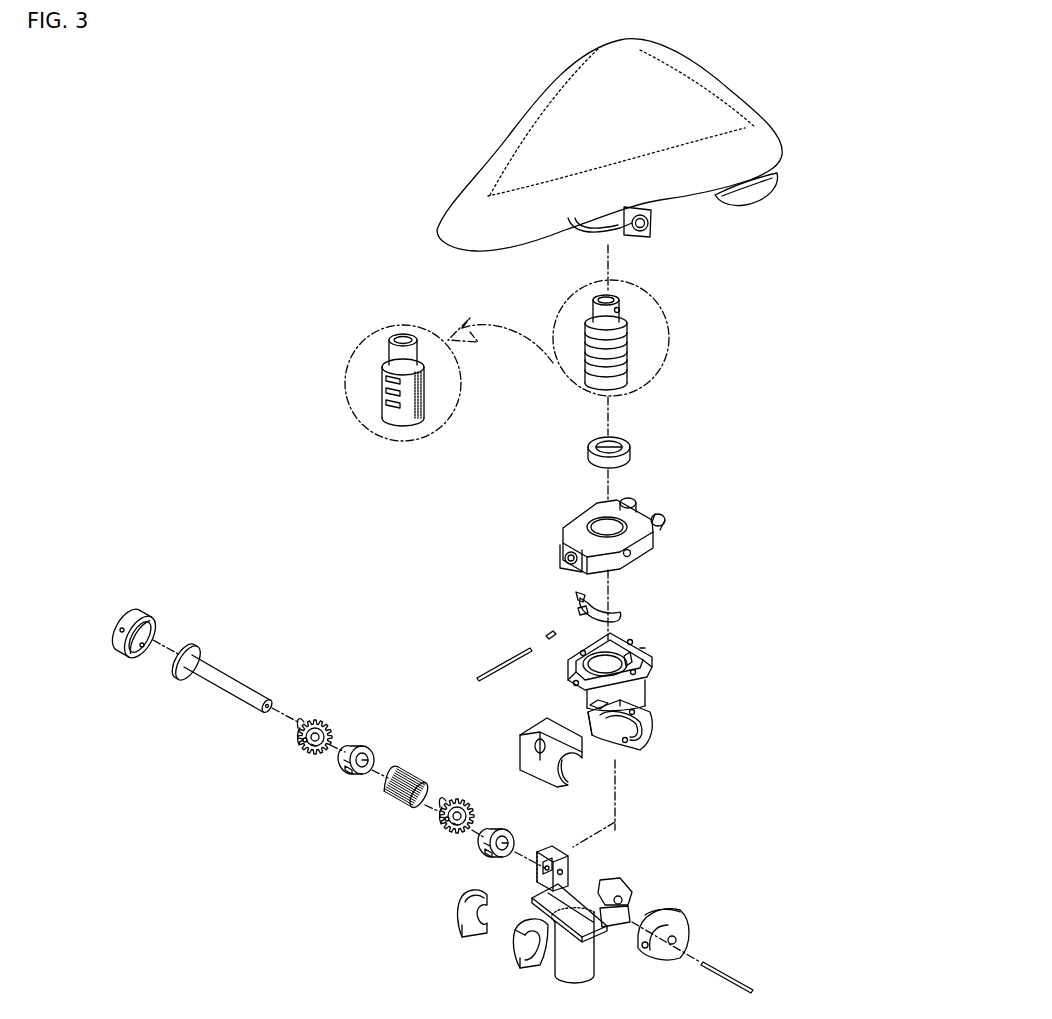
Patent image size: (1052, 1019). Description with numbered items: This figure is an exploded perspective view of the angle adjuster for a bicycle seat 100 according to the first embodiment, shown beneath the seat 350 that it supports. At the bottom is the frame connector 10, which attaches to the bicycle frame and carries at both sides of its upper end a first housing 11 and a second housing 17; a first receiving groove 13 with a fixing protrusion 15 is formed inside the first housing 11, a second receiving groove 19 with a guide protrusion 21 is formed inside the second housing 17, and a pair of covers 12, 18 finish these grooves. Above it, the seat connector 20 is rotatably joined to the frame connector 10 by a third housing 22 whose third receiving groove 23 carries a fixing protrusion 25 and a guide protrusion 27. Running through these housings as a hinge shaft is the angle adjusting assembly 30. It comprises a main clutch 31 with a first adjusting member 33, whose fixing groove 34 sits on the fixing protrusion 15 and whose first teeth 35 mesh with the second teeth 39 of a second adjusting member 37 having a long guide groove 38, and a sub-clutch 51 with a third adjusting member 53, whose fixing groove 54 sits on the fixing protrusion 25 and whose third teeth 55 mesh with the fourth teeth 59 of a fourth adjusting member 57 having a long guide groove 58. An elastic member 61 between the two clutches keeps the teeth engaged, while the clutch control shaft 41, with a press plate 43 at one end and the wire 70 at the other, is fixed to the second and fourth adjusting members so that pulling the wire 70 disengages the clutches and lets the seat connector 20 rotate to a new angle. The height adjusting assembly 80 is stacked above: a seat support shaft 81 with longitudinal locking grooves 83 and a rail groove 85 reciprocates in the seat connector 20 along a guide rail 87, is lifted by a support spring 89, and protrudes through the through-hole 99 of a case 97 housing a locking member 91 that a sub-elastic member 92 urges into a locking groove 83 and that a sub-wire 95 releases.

The angle adjuster for a bicycle seat 100 is at (287, 278).
The seat 350 is at (531, 167).
The height adjusting assembly 80 is at (710, 418).
The seat support shaft 81 is at (450, 355).
The locking grooves 83 is at (597, 372).
The rail groove 85 is at (430, 402).
The support spring 89 is at (630, 445).
The through-hole 99 is at (600, 520).
The case 97 is at (642, 648).
The locking member 91 is at (578, 602).
The sub-elastic member 92 is at (548, 634).
The sub-wire 95 is at (497, 660).
The guide rail 87 is at (648, 660).
The seat connector 20 is at (590, 733).
The guide protrusion 27 is at (603, 712).
The third housing 22 is at (520, 742).
The fixing protrusion 25 is at (658, 745).
The third receiving groove 23 is at (643, 739).
The frame connector 10 is at (592, 960).
The first housing 11 is at (460, 905).
The first receiving groove 13 is at (556, 868).
The fixing protrusion 15 is at (568, 862).
The second housing 17 is at (569, 896).
The guide protrusion 21 is at (628, 882).
The second receiving groove 19 is at (632, 908).
The cover 18 is at (660, 910).
The wire 70 is at (740, 970).
The angle adjusting assembly 30 is at (343, 841).
The cover 12 is at (138, 605).
The press plate 43 is at (190, 650).
The clutch control shaft 41 is at (238, 690).
The main clutch 31 is at (320, 736).
The first adjusting member 33 is at (300, 728).
The fixing groove 34 is at (302, 740).
The first teeth 35 is at (313, 748).
The second adjusting member 37 is at (339, 752).
The guide groove 38 is at (355, 772).
The second teeth 39 is at (348, 765).
The elastic member 61 is at (405, 770).
The sub-clutch 51 is at (459, 819).
The third adjusting member 53 is at (440, 809).
The fixing groove 54 is at (443, 820).
The third teeth 55 is at (455, 828).
The fourth adjusting member 57 is at (478, 834).
The guide groove 58 is at (493, 857).
The fourth teeth 59 is at (485, 848).